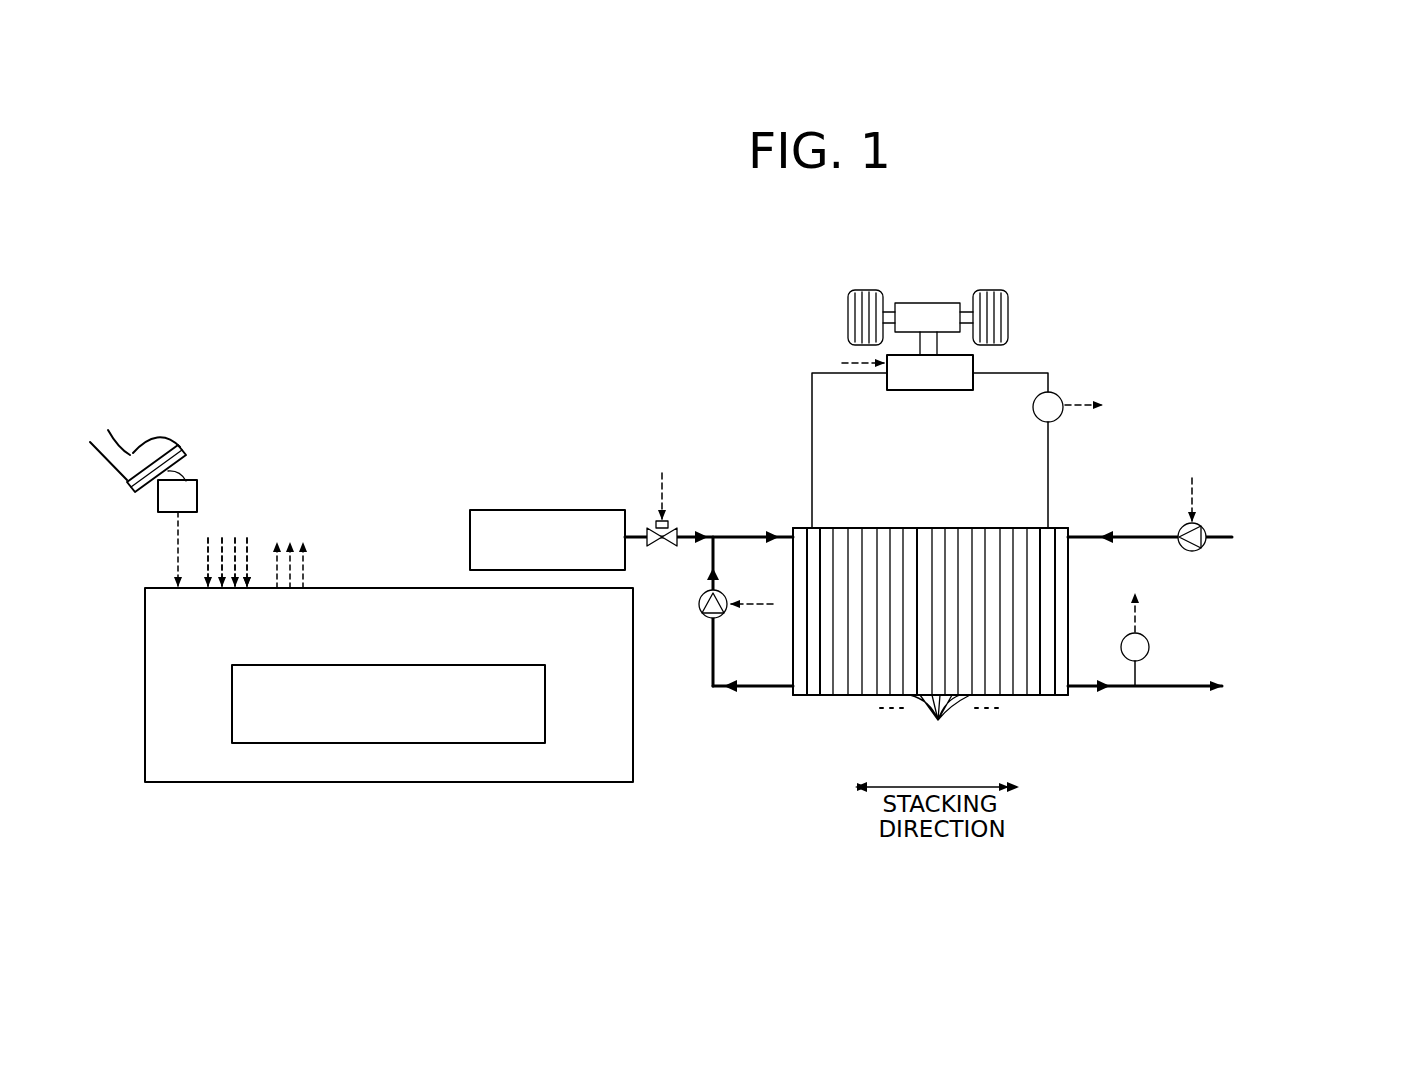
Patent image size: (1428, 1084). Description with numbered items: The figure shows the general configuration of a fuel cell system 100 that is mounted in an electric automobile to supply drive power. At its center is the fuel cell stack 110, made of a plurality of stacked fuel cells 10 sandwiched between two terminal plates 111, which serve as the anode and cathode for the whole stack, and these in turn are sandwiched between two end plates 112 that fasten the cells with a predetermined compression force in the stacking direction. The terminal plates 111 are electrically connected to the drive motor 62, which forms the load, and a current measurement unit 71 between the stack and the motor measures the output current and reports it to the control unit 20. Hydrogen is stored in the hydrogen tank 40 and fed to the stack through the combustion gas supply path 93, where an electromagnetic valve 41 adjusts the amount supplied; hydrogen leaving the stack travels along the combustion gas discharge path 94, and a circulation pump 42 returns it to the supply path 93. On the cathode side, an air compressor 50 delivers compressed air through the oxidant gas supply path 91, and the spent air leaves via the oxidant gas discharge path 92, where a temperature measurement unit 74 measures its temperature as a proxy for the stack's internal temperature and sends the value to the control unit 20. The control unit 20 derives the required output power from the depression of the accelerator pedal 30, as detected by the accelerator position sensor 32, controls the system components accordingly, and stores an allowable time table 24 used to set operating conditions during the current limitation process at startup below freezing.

The fuel cell system 100 is at (1170, 384).
The fuel cell 10 is at (930, 639).
The terminal plate 111 is at (806, 696).
The end plate 112 is at (796, 696).
The control unit 20 is at (633, 728).
The allowable time table 24 is at (488, 665).
The accelerator pedal 30 is at (187, 442).
The accelerator position sensor 32 is at (190, 480).
The hydrogen tank 40 is at (560, 508).
The electromagnetic valve 41 is at (653, 531).
The circulation pump 42 is at (700, 597).
The air compressor 50 is at (1192, 551).
The drive motor 62 is at (960, 390).
The current measurement unit 71 is at (1058, 393).
The temperature measurement unit 74 is at (1150, 647).
The oxidant gas supply path 91 is at (1125, 540).
The oxidant gas discharge path 92 is at (1138, 688).
The combustion gas supply path 93 is at (750, 533).
The combustion gas discharge path 94 is at (762, 692).
The fuel cell stack 110 is at (784, 623).